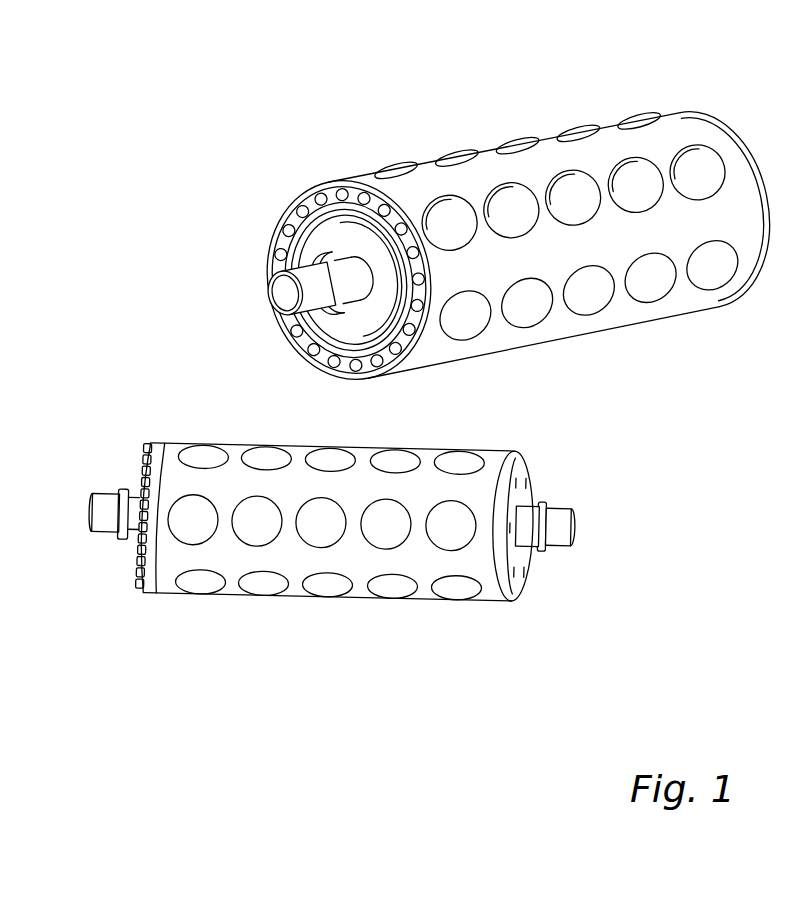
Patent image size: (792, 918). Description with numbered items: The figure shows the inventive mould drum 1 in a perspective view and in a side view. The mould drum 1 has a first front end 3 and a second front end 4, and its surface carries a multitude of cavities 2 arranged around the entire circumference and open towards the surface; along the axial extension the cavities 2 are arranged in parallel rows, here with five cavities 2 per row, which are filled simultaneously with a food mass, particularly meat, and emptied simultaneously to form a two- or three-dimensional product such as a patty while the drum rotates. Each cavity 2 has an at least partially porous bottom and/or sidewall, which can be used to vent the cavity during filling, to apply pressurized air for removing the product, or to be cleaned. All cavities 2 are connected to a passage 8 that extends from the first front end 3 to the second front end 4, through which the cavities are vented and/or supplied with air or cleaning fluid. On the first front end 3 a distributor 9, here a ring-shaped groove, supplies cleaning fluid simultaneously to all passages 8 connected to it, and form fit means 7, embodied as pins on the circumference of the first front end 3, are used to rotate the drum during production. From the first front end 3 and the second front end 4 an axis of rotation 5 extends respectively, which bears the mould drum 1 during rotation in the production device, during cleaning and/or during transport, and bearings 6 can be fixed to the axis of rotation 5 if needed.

The mould drum 1 is at (697, 102).
The cavities 2 is at (573, 190).
The first front end 3 is at (307, 205).
The second front end 4 is at (517, 465).
The axis of rotation 5 is at (290, 268).
The bearings 6 is at (310, 280).
The form fit means 7 is at (317, 360).
The passage 8 is at (350, 210).
The distributor 9 is at (322, 215).